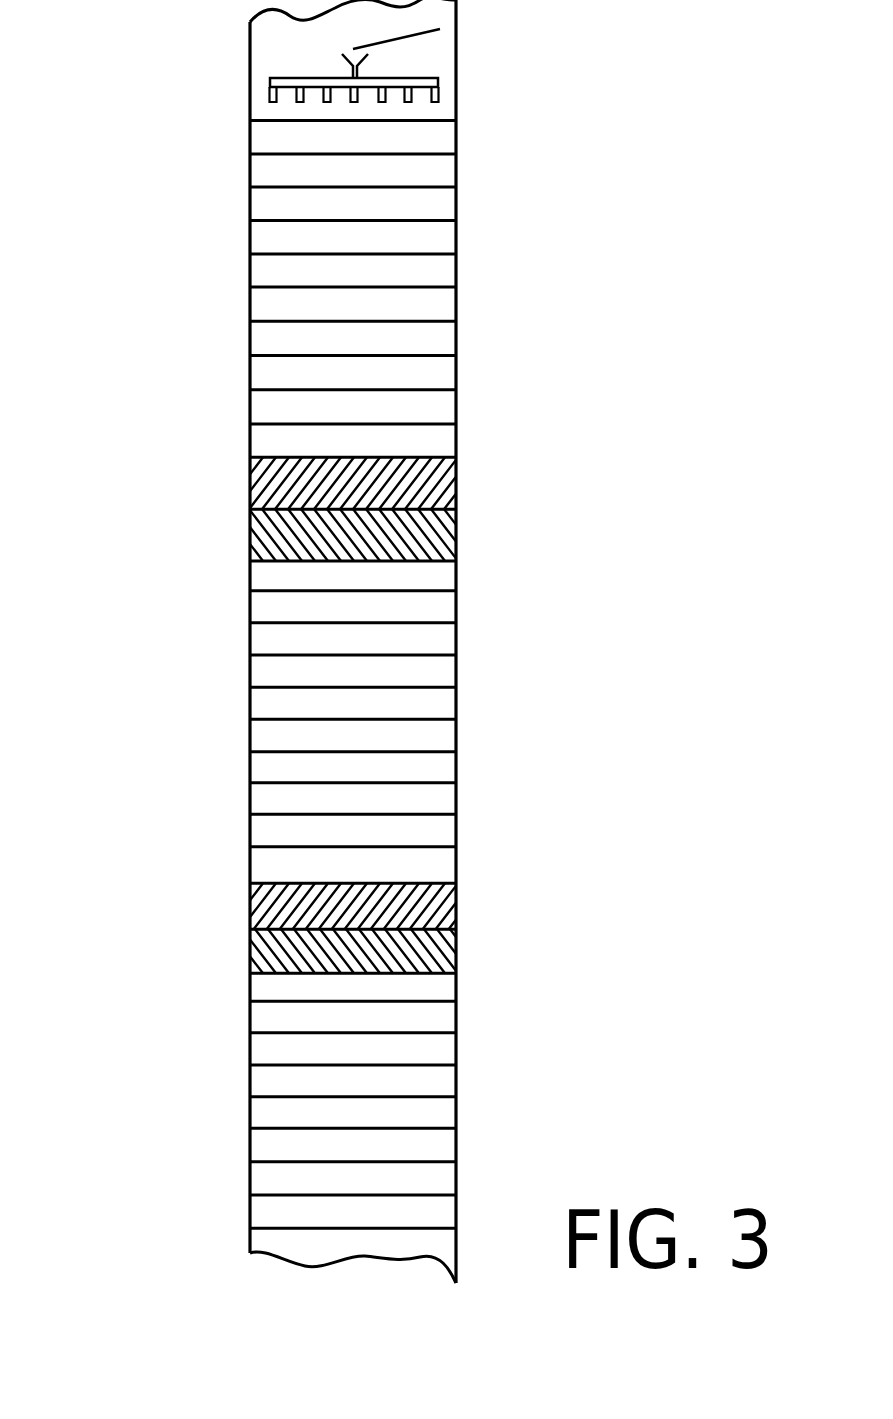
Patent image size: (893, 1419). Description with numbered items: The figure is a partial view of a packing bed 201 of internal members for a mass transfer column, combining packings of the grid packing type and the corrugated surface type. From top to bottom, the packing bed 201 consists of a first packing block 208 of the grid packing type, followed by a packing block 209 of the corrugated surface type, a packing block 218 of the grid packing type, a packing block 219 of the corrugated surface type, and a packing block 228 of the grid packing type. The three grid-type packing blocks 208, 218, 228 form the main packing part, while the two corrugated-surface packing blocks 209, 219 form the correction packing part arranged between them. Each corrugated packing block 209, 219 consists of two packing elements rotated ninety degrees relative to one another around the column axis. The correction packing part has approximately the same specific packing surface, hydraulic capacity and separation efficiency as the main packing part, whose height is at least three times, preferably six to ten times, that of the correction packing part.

The packing bed 201 is at (483, 657).
The first packing block 208 is at (235, 292).
The packing block 209 is at (235, 509).
The packing block 218 is at (233, 722).
The packing block 219 is at (235, 937).
The packing block 228 is at (233, 1117).